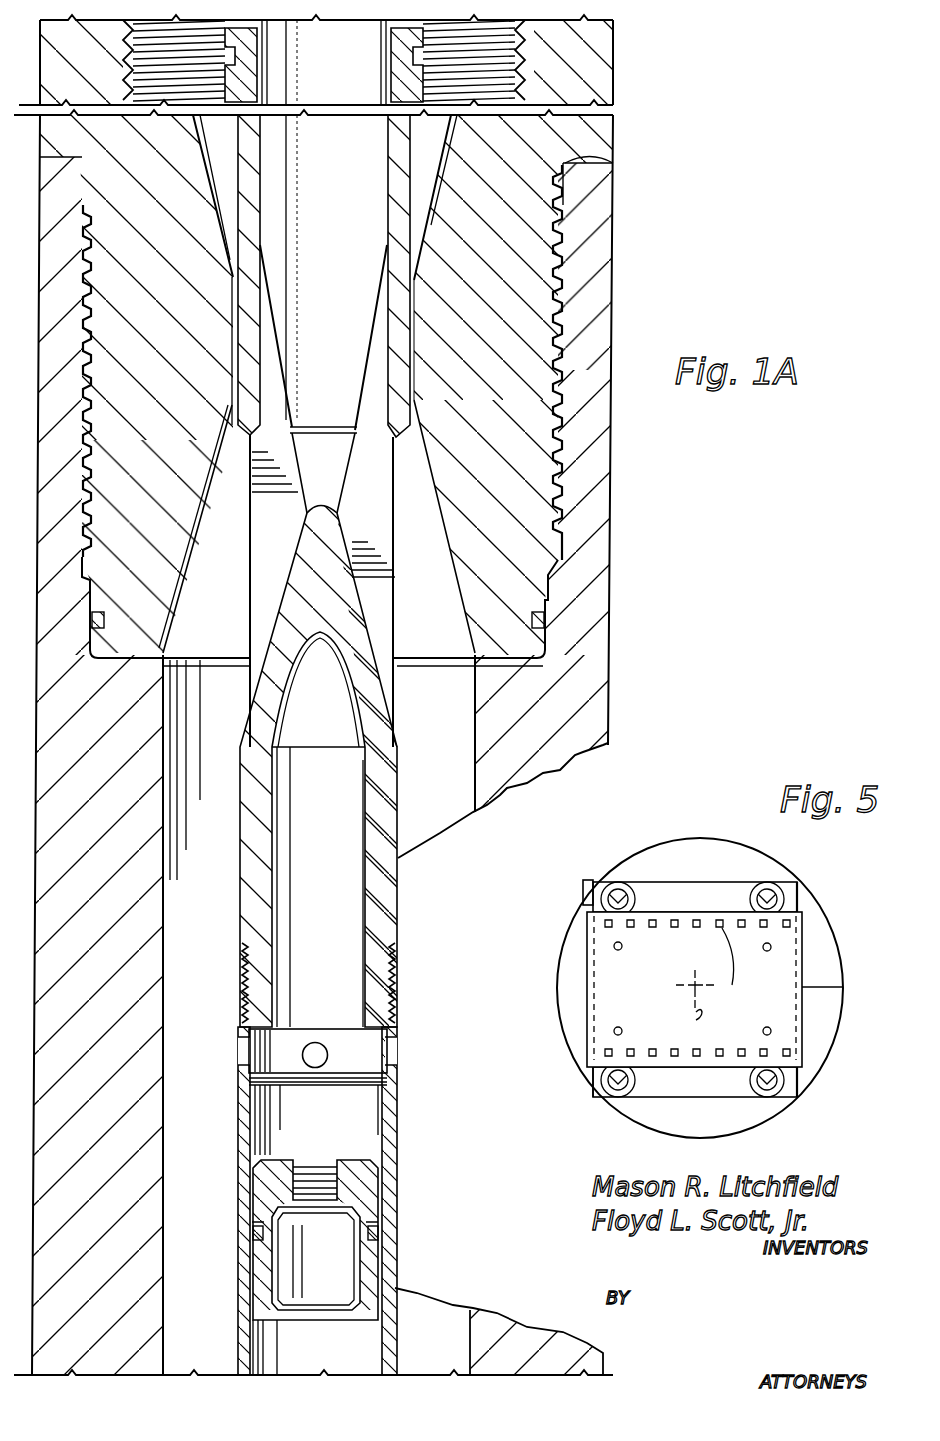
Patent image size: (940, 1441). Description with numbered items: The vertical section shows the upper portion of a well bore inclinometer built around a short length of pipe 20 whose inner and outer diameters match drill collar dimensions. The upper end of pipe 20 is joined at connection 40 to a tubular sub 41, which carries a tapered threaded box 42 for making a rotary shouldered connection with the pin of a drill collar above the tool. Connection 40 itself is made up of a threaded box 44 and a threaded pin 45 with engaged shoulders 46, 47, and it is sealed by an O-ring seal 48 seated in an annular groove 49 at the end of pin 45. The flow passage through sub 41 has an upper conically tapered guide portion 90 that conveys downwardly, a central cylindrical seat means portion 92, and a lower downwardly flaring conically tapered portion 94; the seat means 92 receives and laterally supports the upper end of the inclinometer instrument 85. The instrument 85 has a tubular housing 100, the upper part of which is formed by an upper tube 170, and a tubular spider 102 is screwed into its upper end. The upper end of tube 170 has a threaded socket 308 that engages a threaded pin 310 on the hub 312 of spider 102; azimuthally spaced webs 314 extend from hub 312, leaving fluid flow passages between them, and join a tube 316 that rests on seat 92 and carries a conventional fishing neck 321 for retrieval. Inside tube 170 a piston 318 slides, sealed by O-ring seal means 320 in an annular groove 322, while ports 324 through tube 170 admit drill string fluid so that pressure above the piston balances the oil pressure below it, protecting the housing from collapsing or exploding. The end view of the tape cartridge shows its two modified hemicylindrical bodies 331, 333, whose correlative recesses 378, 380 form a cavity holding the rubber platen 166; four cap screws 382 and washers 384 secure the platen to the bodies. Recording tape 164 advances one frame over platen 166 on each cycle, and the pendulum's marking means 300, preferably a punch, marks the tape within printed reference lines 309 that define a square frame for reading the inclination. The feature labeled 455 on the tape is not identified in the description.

In FIG. 1A, the pipe 20 is at (590, 663).
In FIG. 1A, the connection 40 is at (562, 218).
In FIG. 1A, the tubular sub 41 is at (590, 129).
In FIG. 1A, the tapered threaded box 42 is at (545, 62).
In FIG. 1A, the threaded box 44 is at (560, 292).
In FIG. 1A, the threaded pin 45 is at (560, 256).
In FIG. 1A, the engaged shoulder 46 is at (590, 163).
In FIG. 1A, the engaged shoulder 47 is at (600, 152).
In FIG. 1A, the O-ring seal 48 is at (550, 640).
In FIG. 1A, the annular groove 49 is at (548, 618).
In FIG. 1A, the inclinometer instrument 85 is at (399, 815).
In FIG. 1A, the conically tapered guide portion 90 is at (440, 152).
In FIG. 1A, the cylindrical seat means portion 92 is at (400, 320).
In FIG. 1A, the downwardly flaring conically tapered portion 94 is at (456, 588).
In FIG. 1A, the tubular housing 100 is at (246, 1140).
In FIG. 1A, the tubular spider 102 is at (398, 745).
In FIG. 1A, the upper tube 170 is at (242, 1337).
In FIG. 1A, the threaded socket 308 is at (242, 960).
In FIG. 1A, the threaded pin 310 is at (248, 992).
In FIG. 1A, the hub 312 is at (396, 772).
In FIG. 1A, the webs 314 is at (356, 480).
In FIG. 1A, the tube 316 is at (278, 186).
In FIG. 1A, the piston 318 is at (258, 1280).
In FIG. 1A, the O-ring seal means 320 is at (256, 1236).
In FIG. 1A, the fishing neck 321 is at (400, 55).
In FIG. 1A, the annular groove 322 is at (256, 1224).
In FIG. 1A, the ports 324 is at (318, 1045).
In FIG. 5, the recording tape 164 is at (775, 963).
In FIG. 5, the platen 166 is at (712, 893).
In FIG. 5, the marking means 300 is at (696, 1018).
In FIG. 5, the lines 309 is at (620, 952).
In FIG. 5, the hemicylindrical body 331 is at (825, 978).
In FIG. 5, the hemicylindrical body 333 is at (825, 1002).
In FIG. 5, the recess 378 is at (595, 880).
In FIG. 5, the recess 380 is at (593, 1090).
In FIG. 5, the cap screws 382 is at (604, 892).
In FIG. 5, the washers 384 is at (638, 902).
In FIG. 5, the slot 455 is at (740, 1047).